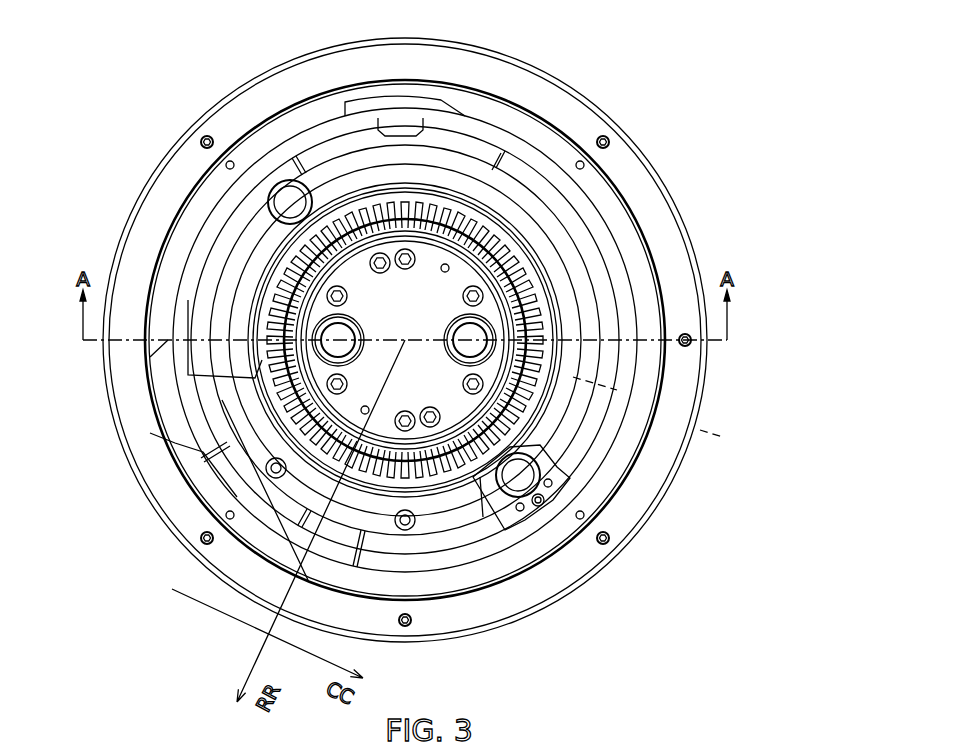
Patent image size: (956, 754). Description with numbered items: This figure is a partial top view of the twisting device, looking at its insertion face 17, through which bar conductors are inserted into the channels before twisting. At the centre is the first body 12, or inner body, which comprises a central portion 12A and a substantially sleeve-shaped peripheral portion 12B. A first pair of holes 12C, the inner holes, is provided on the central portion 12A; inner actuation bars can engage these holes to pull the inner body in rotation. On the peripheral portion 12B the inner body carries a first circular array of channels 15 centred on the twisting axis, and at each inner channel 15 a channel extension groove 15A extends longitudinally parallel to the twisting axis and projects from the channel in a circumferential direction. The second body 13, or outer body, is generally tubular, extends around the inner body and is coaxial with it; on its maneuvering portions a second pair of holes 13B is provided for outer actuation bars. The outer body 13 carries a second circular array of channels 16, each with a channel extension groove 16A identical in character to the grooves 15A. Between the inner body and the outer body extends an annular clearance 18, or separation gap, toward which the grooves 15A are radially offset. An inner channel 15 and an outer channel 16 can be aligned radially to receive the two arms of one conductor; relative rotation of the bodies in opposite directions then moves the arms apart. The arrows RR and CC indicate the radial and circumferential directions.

The first body 12 is at (522, 472).
The central portion 12A is at (297, 250).
The peripheral portion 12B is at (272, 372).
The first pair of holes 12C is at (496, 344).
The second body 13 is at (307, 462).
The second pair of holes 13B is at (283, 193).
The first circular array of channels 15 is at (511, 262).
The channel extension groove 15A is at (519, 283).
The second circular array of channels 16 is at (552, 418).
The channel extension groove 16A is at (555, 400).
The first face 17 is at (266, 425).
The annular clearance 18 is at (460, 227).